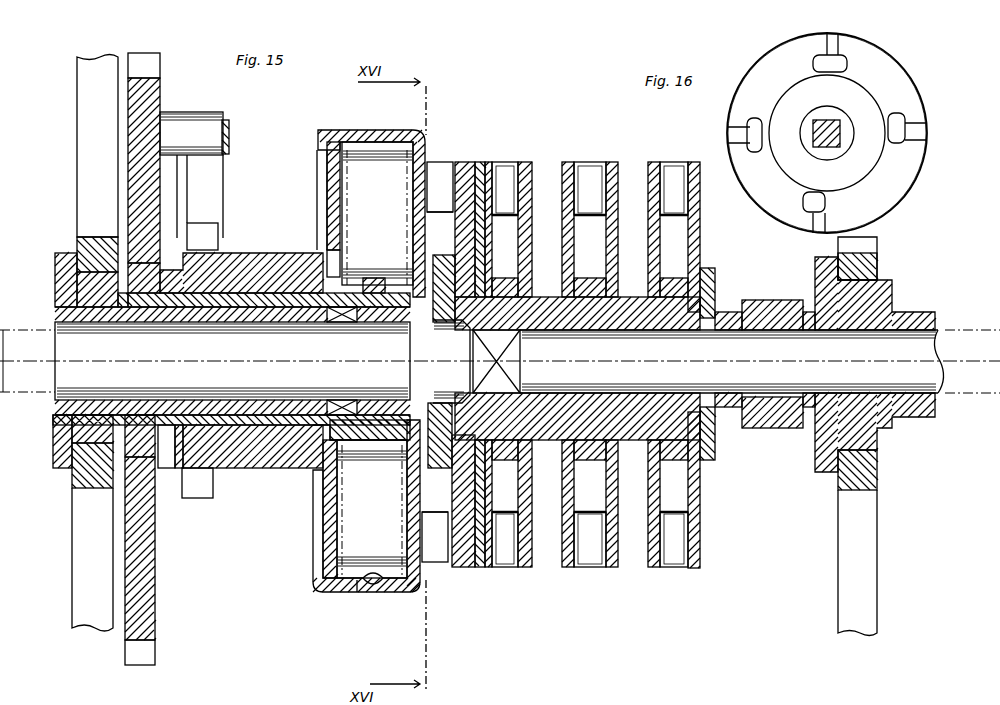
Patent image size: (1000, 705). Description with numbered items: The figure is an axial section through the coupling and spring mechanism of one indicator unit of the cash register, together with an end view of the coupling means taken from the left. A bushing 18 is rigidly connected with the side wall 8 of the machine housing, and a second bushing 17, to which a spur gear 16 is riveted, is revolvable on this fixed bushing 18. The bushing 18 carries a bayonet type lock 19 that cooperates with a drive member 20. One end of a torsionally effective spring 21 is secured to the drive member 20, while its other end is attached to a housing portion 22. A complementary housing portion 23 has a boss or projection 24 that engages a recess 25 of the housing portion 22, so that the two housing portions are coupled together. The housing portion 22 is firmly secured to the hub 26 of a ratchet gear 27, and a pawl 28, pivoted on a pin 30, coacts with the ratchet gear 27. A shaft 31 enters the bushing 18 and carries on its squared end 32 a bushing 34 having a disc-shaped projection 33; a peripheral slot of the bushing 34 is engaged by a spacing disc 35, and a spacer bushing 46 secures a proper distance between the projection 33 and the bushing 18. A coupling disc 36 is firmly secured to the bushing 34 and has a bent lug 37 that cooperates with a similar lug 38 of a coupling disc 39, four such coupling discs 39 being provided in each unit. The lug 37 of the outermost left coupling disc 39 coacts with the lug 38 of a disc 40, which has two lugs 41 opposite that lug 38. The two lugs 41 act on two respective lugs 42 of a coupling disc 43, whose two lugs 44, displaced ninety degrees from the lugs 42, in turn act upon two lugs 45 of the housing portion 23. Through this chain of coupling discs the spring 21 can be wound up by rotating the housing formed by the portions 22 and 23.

In FIG. 15, the side wall 8 is at (90, 173).
In FIG. 15, the spur gear 16 is at (138, 207).
In FIG. 15, the bushing 17 is at (95, 297).
In FIG. 15, the bushing 18 is at (58, 256).
In FIG. 15, the bayonet type lock 19 is at (330, 402).
In FIG. 15, the drive member 20 is at (320, 470).
In FIG. 15, the torsionally effective spring 21 is at (337, 215).
In FIG. 15, the housing portion 22 is at (328, 175).
In FIG. 15, the complementary housing portion 23 is at (380, 130).
In FIG. 15, the boss or projection 24 is at (374, 592).
In FIG. 15, the recess 25 is at (393, 592).
In FIG. 15, the hub 26 is at (250, 250).
In FIG. 15, the ratchet gear 27 is at (212, 228).
In FIG. 15, the pawl 28 is at (225, 112).
In FIG. 15, the pin 30 is at (232, 138).
In FIG. 15, the shaft 31 is at (18, 385).
In FIG. 16, the shaft 31 is at (812, 121).
In FIG. 15, the squared end 32 is at (496, 398).
In FIG. 15, the disc-shaped projection 33 is at (450, 272).
In FIG. 15, the bushing 34 is at (628, 305).
In FIG. 15, the spacing disc 35 is at (715, 280).
In FIG. 15, the coupling disc 36 is at (700, 242).
In FIG. 15, the bent projection or lug 37 is at (505, 173).
In FIG. 15, the lug 38 is at (505, 214).
In FIG. 15, the coupling disc 39 is at (528, 163).
In FIG. 15, the disc 40 is at (482, 163).
In FIG. 16, the disc 40 is at (905, 180).
In FIG. 16, the lugs 41 is at (733, 128).
In FIG. 16, the lugs 42 is at (740, 143).
In FIG. 15, the coupling disc 43 is at (468, 175).
In FIG. 16, the coupling disc 43 is at (827, 133).
In FIG. 15, the lugs 44 is at (442, 165).
In FIG. 16, the lugs 44 is at (840, 46).
In FIG. 15, the lugs 45 is at (440, 213).
In FIG. 15, the spacer bushing 46 is at (772, 303).